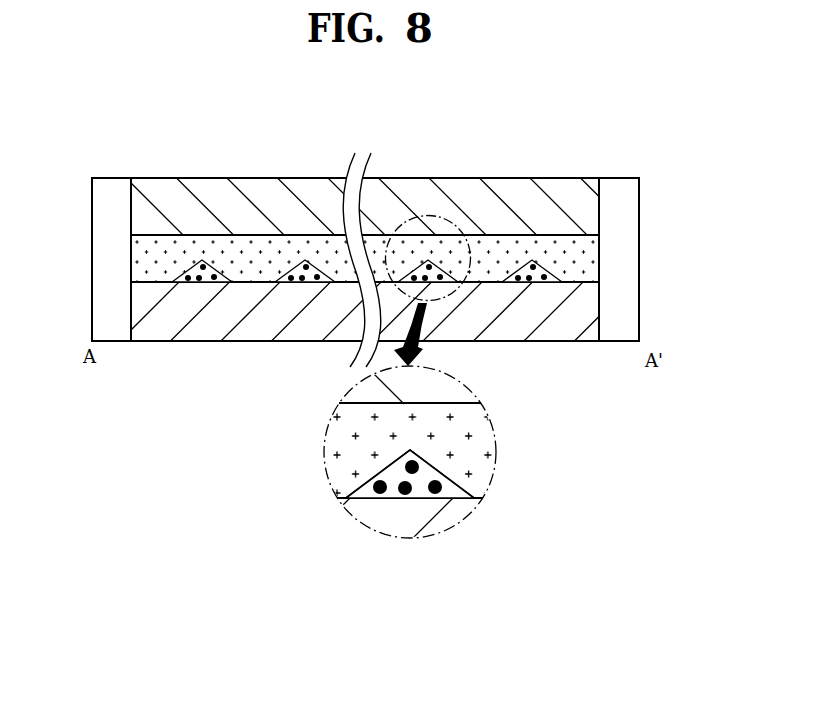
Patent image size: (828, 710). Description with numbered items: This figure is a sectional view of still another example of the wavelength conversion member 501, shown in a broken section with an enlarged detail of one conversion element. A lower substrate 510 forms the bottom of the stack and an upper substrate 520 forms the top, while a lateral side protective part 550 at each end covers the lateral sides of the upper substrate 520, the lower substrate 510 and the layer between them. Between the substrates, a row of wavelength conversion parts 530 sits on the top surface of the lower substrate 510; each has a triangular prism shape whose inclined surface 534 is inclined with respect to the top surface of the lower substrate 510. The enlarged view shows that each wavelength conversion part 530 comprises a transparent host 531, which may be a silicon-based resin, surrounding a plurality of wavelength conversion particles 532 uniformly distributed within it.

The display panel 501 is at (122, 121).
The lower substrate 510 is at (590, 317).
The upper substrate 520 is at (590, 205).
The lateral side protective part 550 is at (107, 258).
The wavelength conversion part 530 is at (443, 467).
The host 531 is at (396, 498).
The wavelength conversion particle 532 is at (442, 498).
The inclined surface 534 is at (452, 481).